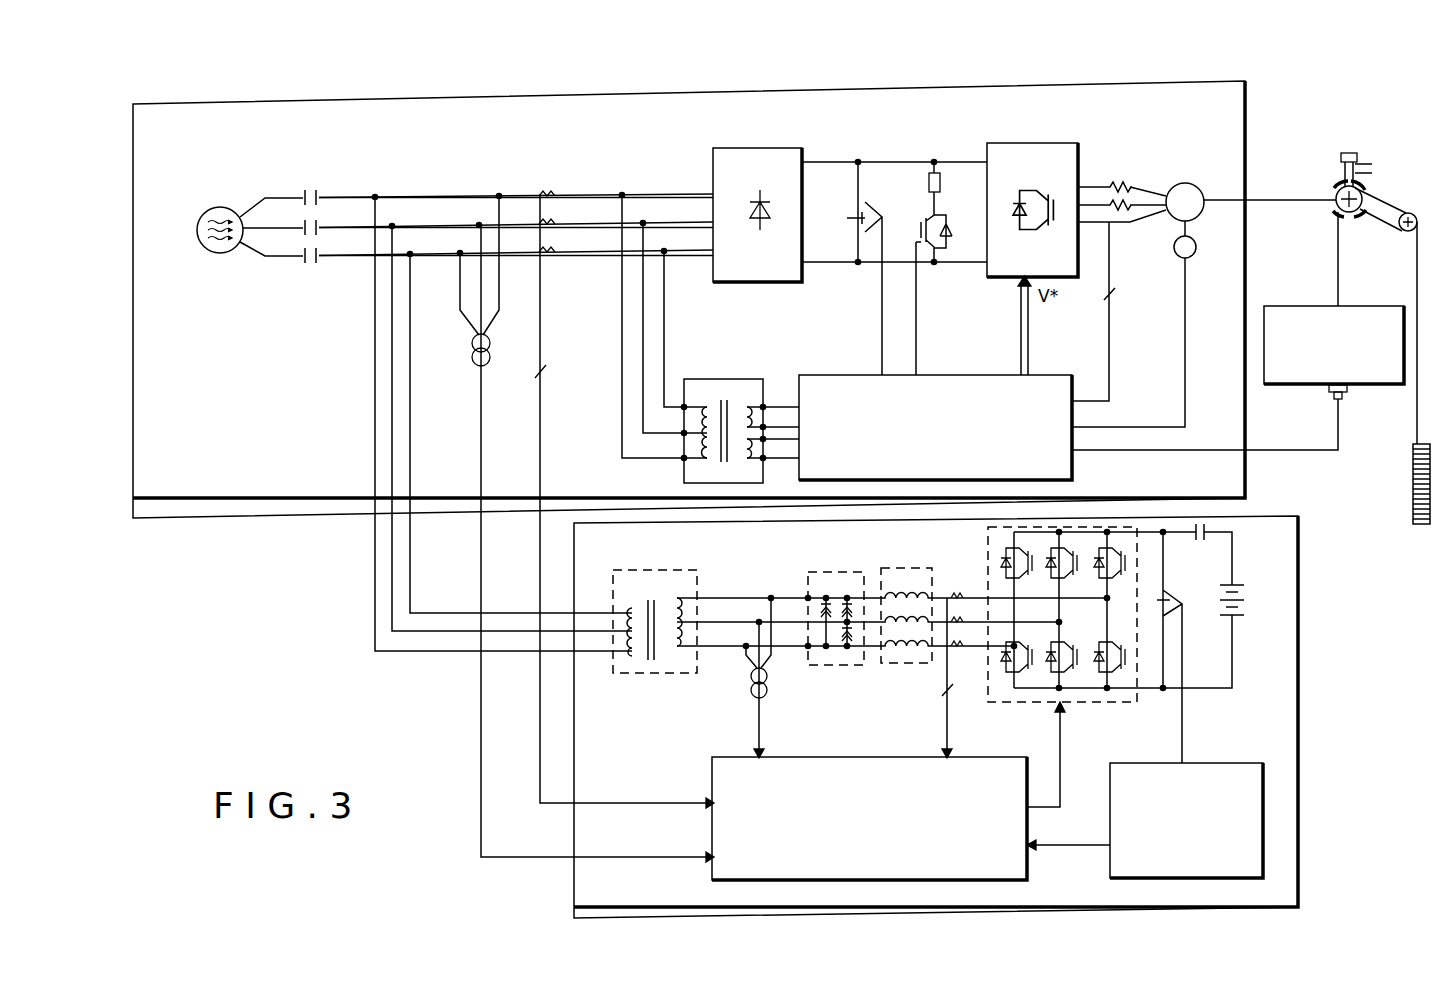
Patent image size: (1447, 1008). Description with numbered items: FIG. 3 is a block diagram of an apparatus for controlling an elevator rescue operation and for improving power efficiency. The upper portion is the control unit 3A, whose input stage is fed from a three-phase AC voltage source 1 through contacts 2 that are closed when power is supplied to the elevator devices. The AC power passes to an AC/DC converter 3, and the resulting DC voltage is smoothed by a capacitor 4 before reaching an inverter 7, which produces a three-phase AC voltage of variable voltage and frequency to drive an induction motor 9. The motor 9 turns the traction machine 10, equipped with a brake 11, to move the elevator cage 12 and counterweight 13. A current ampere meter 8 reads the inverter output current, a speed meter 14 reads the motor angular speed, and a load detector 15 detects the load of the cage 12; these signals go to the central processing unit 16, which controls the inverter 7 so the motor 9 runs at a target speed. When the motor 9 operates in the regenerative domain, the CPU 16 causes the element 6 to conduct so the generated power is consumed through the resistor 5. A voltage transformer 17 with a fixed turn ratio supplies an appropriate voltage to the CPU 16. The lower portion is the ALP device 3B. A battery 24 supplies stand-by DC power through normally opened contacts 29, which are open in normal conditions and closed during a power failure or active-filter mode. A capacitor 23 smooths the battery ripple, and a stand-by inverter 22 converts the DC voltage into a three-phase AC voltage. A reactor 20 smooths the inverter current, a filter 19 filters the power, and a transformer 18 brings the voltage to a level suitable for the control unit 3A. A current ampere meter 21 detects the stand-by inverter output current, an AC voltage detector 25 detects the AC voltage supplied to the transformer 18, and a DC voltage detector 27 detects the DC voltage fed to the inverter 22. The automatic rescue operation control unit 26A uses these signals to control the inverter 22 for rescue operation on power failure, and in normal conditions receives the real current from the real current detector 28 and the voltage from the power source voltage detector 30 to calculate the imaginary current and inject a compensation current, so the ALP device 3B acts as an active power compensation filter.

The three-phase AC voltage source 1 is at (225, 207).
The contacts 2 is at (309, 185).
The AC/DC converter 3 is at (750, 148).
The capacitor 4 is at (852, 212).
The resistor 5 is at (928, 185).
The element 6 is at (950, 215).
The inverter 7 is at (1017, 148).
The current ampere meter 8 is at (1118, 182).
The induction motor 9 is at (1185, 183).
The traction machine 10 is at (1413, 213).
The brake 11 is at (1350, 152).
The elevator cage 12 is at (1300, 306).
The counterweight 13 is at (1413, 490).
The speed meter 14 is at (1196, 252).
The load detector 15 is at (1330, 394).
The central processing unit 16 is at (966, 378).
The voltage transformer 17 is at (716, 380).
The transformer 18 is at (645, 578).
The filter 19 is at (826, 575).
The reactor 20 is at (893, 570).
The current ampere meter 21 is at (957, 592).
The stand-by inverter 22 is at (1087, 704).
The capacitor 23 is at (1162, 590).
The battery 24 is at (1240, 610).
The AC voltage detector 25 is at (770, 688).
The automatic rescue operation control unit 26A is at (842, 770).
The DC voltage detector 27 is at (1220, 763).
The real current detector 28 is at (546, 192).
The normally opened contacts 29 is at (1209, 527).
The power source voltage detector 30 is at (473, 346).
The control unit 3A is at (963, 88).
The ALP device 3B is at (1299, 722).